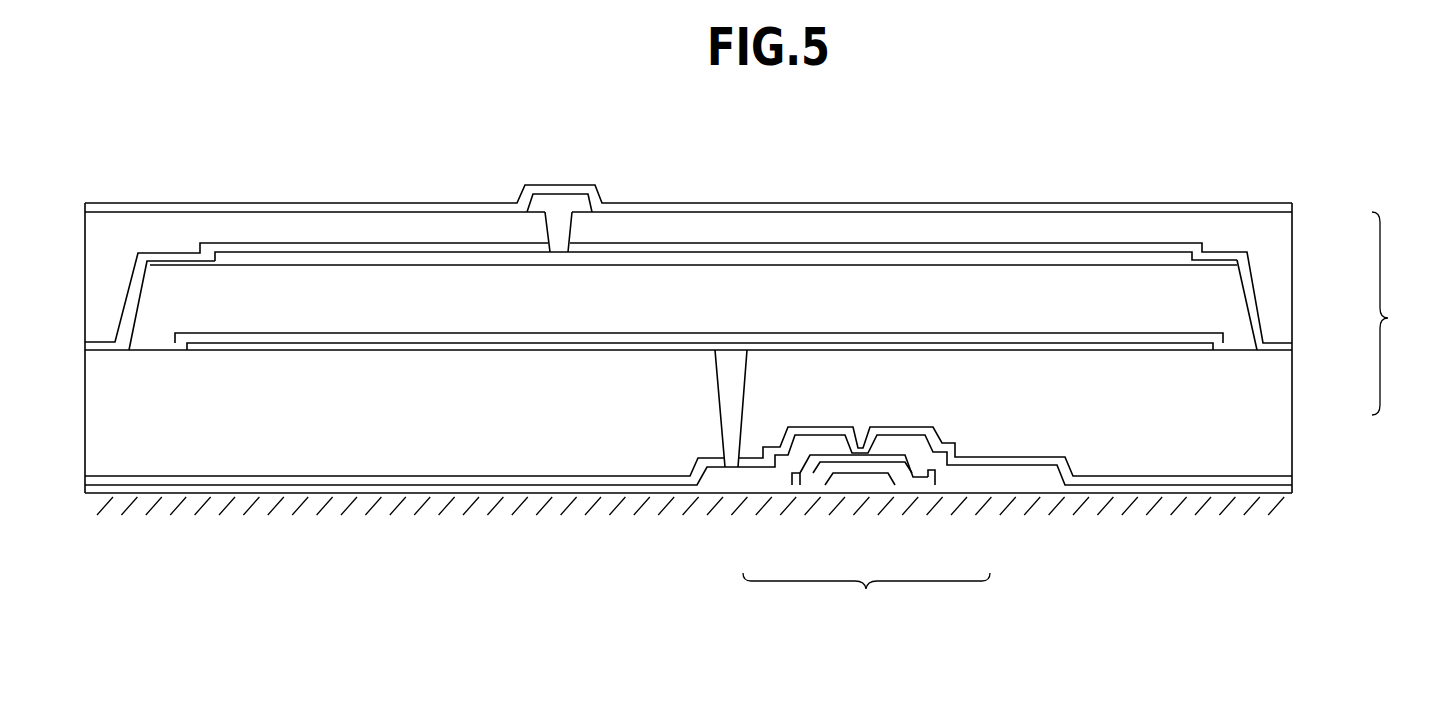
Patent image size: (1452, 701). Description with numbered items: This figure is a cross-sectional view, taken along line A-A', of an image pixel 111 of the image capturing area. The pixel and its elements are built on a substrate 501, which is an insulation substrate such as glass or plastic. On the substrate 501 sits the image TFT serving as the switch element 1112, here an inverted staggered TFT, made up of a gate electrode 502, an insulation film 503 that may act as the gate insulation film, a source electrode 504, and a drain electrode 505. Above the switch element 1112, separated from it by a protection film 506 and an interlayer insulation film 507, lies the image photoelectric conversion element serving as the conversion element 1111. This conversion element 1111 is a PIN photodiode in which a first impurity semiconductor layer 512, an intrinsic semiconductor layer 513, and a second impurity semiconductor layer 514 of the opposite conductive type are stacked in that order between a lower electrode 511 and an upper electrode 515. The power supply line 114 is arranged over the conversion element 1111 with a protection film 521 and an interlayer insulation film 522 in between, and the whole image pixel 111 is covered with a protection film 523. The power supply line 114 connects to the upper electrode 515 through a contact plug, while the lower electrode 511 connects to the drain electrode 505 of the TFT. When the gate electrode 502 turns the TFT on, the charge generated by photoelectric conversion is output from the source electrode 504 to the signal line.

The image pixel 111 is at (150, 137).
The power supply line 114 is at (558, 204).
The substrate 501 is at (1298, 493).
The gate electrode 502 is at (855, 484).
The insulation film 503 is at (881, 474).
The source electrode 504 is at (926, 480).
The drain electrode 505 is at (797, 478).
The protection film 506 is at (625, 482).
The interlayer insulation film 507 is at (502, 450).
The lower electrode 511 is at (1185, 350).
The first impurity semiconductor layer 512 is at (1233, 350).
The intrinsic semiconductor layer 513 is at (1222, 312).
The second impurity semiconductor layer 514 is at (1215, 268).
The upper electrode 515 is at (1178, 260).
The protection film 521 is at (1155, 252).
The interlayer insulation film 522 is at (1093, 232).
The protection film 523 is at (1033, 207).
The conversion element 1111 is at (1412, 313).
The switch element 1112 is at (866, 598).